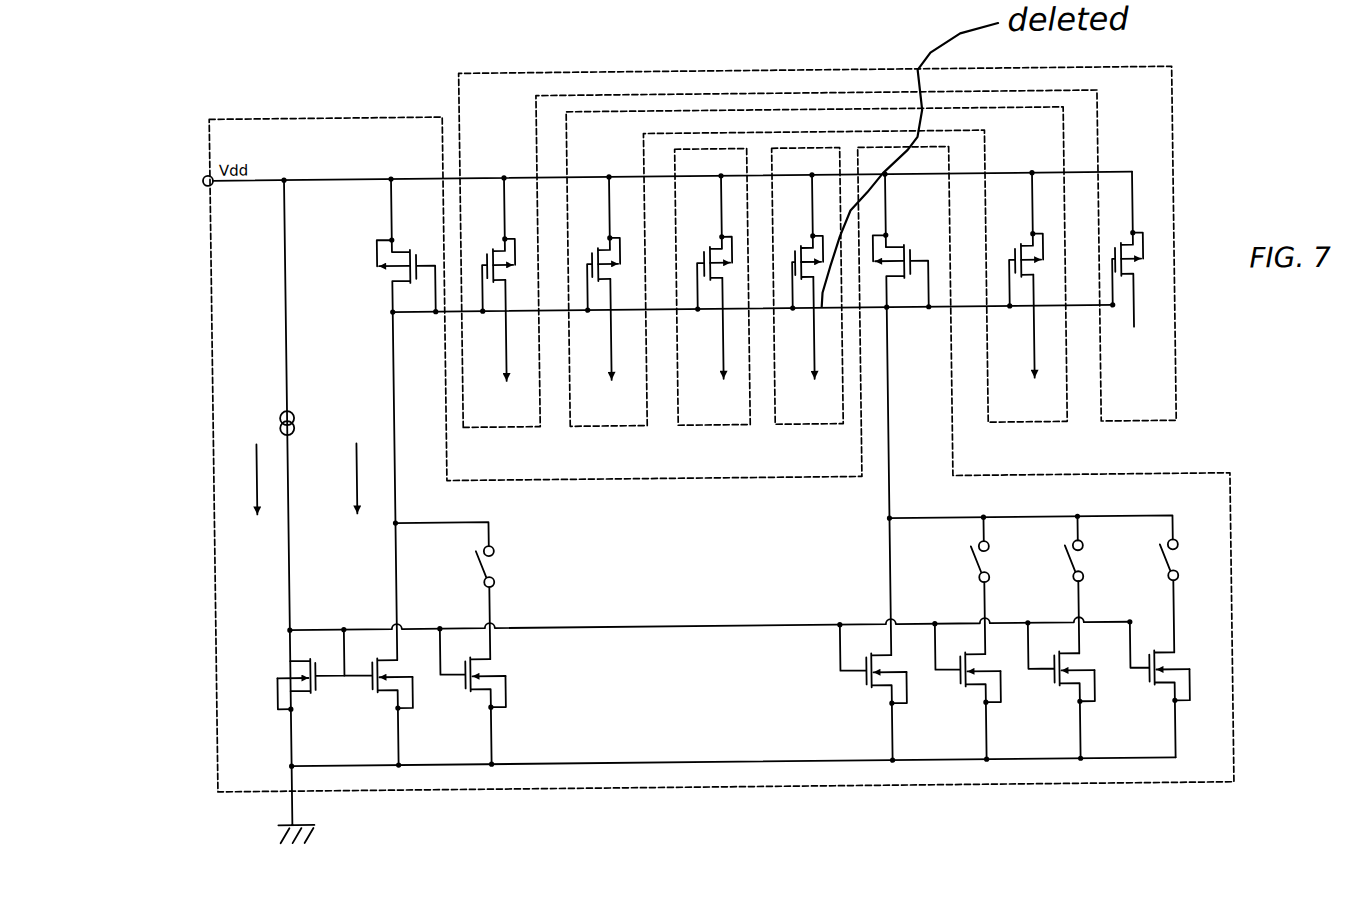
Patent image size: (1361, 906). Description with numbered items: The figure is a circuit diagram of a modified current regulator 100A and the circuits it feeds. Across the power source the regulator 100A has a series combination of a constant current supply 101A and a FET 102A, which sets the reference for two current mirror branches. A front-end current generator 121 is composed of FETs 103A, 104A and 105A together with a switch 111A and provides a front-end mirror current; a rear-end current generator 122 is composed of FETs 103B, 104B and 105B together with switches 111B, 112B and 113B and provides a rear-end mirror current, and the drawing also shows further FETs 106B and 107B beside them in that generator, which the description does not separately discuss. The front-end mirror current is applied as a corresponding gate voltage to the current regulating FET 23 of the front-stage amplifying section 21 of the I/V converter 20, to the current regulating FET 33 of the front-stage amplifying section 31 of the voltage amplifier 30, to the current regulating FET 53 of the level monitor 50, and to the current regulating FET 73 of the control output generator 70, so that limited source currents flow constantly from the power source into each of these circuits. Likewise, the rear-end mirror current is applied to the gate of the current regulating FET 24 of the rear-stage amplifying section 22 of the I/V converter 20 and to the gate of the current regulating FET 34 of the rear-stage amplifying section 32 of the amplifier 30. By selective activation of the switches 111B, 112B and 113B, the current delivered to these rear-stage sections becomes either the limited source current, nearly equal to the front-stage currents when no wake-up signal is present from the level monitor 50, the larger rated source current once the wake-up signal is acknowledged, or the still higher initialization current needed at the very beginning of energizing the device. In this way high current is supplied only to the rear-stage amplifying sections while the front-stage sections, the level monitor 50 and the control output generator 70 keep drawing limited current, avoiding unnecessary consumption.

The current regulator 100A is at (1229, 506).
The I/V converter 20 is at (530, 434).
The front-stage amplifying section 21 is at (818, 246).
The rear-stage amplifying section 22 is at (1145, 127).
The current regulating FET 23 is at (495, 244).
The current regulating FET 24 is at (1128, 249).
The voltage amplifier 30 is at (629, 435).
The front-stage amplifying section 31 is at (816, 266).
The rear-stage amplifying section 32 is at (1037, 148).
The current regulating FET 33 is at (600, 244).
The current regulating FET 34 is at (1021, 248).
The level monitor 50 is at (722, 436).
The current regulating FET 53 is at (711, 245).
The control output generator 70 is at (819, 437).
The current regulating FET 73 is at (801, 246).
The constant current supply 101A is at (262, 473).
The FET 102A is at (261, 698).
The FET 103A is at (381, 420).
The FET 103B is at (906, 246).
The FET 104A is at (366, 696).
The FET 105A is at (463, 697).
The FET 104B is at (846, 696).
The FET 105B is at (950, 696).
The N-channel MOS transistor 106B is at (1041, 697).
The N-channel MOS transistor 107B is at (1135, 698).
The switch 111A is at (460, 564).
The switch 111B is at (958, 563).
The switch 112B is at (1055, 564).
The switch 113B is at (1147, 565).
The front-end current generator 121 is at (529, 580).
The rear-end current generator 122 is at (848, 576).